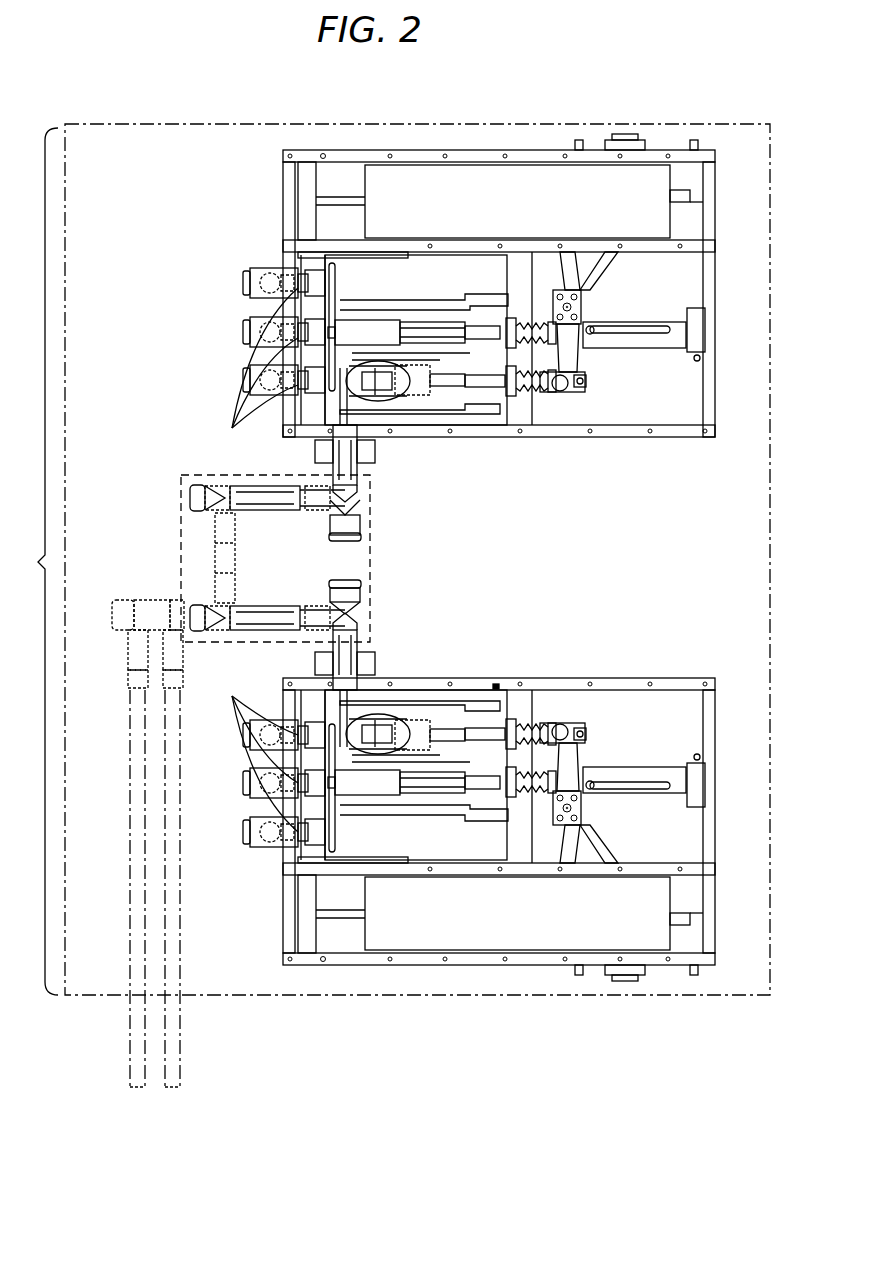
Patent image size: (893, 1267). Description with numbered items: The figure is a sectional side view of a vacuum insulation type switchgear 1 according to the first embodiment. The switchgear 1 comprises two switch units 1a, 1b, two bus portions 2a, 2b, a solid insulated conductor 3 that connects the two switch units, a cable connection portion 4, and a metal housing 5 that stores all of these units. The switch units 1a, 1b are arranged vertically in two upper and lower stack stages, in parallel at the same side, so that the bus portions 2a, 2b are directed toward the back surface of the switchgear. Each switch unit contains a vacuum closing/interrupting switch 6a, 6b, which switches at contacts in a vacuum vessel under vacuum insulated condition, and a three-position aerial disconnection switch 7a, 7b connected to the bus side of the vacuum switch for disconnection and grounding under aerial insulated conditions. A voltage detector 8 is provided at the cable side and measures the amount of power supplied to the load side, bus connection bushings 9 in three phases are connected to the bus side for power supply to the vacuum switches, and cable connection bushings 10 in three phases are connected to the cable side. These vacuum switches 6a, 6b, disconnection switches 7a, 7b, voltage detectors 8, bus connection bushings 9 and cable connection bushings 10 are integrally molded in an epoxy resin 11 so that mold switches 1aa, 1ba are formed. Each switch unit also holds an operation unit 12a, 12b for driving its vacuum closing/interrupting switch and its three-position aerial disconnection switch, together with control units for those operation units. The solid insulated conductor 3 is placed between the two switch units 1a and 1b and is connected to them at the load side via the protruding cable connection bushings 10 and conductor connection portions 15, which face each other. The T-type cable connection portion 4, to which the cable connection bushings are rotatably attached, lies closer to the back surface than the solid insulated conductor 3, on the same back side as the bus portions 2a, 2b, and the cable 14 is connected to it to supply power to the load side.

The switchgear 1 is at (38, 561).
The switch unit 1a is at (340, 148).
The mold switch 1aa is at (578, 362).
The switch unit 1b is at (567, 678).
The mold switch 1ba is at (578, 742).
The bus portion 2a is at (228, 262).
The bus portion 2b is at (228, 718).
The solid insulated conductor 3 is at (370, 555).
The T-type cable connection portion 4 is at (112, 600).
The metal housing 5 is at (117, 124).
The vacuum closing/interrupting switch 6a is at (405, 400).
The vacuum closing/interrupting switch 6b is at (415, 705).
The three-position aerial disconnection switch 7a is at (345, 325).
The three-position aerial disconnection switch 7b is at (345, 800).
The voltage detector 8 is at (315, 455).
The bus connection bushing 9 is at (260, 560).
The cable connection bushing 10 is at (375, 455).
The epoxy resin 11 is at (373, 298).
The operation unit 12a is at (670, 217).
The operation unit 12b is at (670, 897).
The cable 14 is at (130, 878).
The conductor connection portion 15 is at (357, 475).